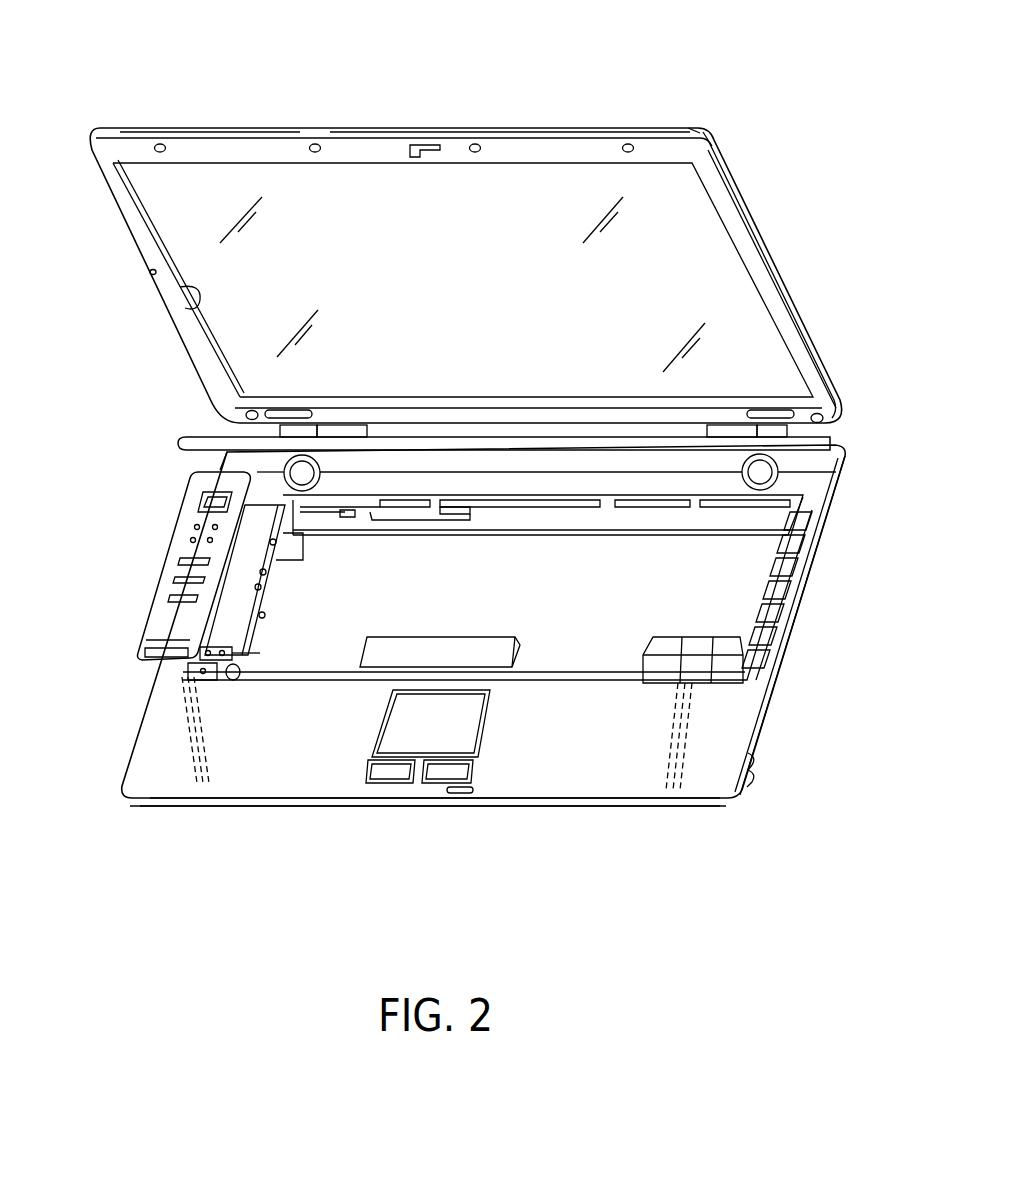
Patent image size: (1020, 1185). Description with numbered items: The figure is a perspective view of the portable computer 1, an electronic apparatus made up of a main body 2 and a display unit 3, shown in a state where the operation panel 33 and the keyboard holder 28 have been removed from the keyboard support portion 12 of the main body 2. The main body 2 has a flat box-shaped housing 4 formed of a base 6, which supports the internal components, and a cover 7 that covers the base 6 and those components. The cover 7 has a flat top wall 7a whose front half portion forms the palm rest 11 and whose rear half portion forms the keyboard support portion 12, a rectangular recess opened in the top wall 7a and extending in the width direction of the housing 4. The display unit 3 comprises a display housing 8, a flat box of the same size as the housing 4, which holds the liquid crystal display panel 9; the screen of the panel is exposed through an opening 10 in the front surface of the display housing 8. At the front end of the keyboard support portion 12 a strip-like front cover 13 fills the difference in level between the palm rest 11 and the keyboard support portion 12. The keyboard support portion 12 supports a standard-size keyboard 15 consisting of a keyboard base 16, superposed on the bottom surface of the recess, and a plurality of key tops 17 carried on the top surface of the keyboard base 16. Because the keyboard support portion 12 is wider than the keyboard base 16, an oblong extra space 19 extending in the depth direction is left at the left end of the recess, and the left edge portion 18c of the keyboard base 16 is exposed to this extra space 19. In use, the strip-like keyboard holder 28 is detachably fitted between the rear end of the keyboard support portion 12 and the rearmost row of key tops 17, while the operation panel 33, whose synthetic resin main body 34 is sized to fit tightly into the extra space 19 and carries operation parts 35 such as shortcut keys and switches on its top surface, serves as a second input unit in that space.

The portable computer 1 is at (683, 118).
The main body 2 is at (380, 808).
The display unit 3 is at (758, 243).
The housing 4 is at (640, 870).
The base 6 is at (578, 805).
The cover 7 is at (630, 790).
The top wall 7a is at (733, 717).
The display housing 8 is at (250, 138).
The liquid crystal display panel 9 is at (577, 190).
The opening 10 is at (190, 306).
The palm rest 11 is at (280, 773).
The keyboard support portion 12 is at (617, 508).
The front cover 13 is at (553, 683).
The keyboard 15 is at (658, 662).
The keyboard base 16 is at (352, 648).
The key tops 17 is at (727, 660).
The left edge portion 18c is at (262, 590).
The extra space 19 is at (238, 603).
The keyboard holder 28 is at (487, 445).
The operation panel 33 is at (168, 528).
The main body 34 is at (160, 623).
The operation parts 35 is at (178, 560).